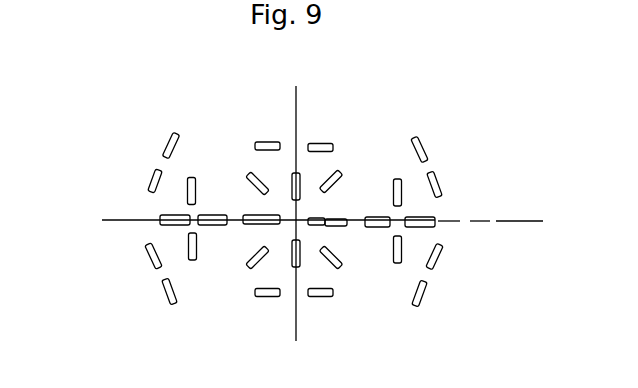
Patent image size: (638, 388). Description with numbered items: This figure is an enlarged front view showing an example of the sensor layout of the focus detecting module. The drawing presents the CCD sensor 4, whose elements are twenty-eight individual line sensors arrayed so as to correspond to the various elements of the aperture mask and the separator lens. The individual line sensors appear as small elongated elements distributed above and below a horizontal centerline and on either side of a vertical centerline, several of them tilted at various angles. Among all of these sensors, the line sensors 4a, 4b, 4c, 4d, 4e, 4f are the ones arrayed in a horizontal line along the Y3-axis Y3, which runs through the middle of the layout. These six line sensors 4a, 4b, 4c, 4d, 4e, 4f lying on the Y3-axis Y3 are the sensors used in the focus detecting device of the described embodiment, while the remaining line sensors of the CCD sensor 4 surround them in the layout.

The CCD sensor 4 is at (450, 288).
The line sensor 4a is at (160, 218).
The line sensor 4b is at (213, 217).
The line sensor 4c is at (253, 225).
The line sensor 4d is at (333, 223).
The line sensor 4e is at (372, 217).
The line sensor 4f is at (433, 218).
The Y3-axis Y3 is at (537, 222).